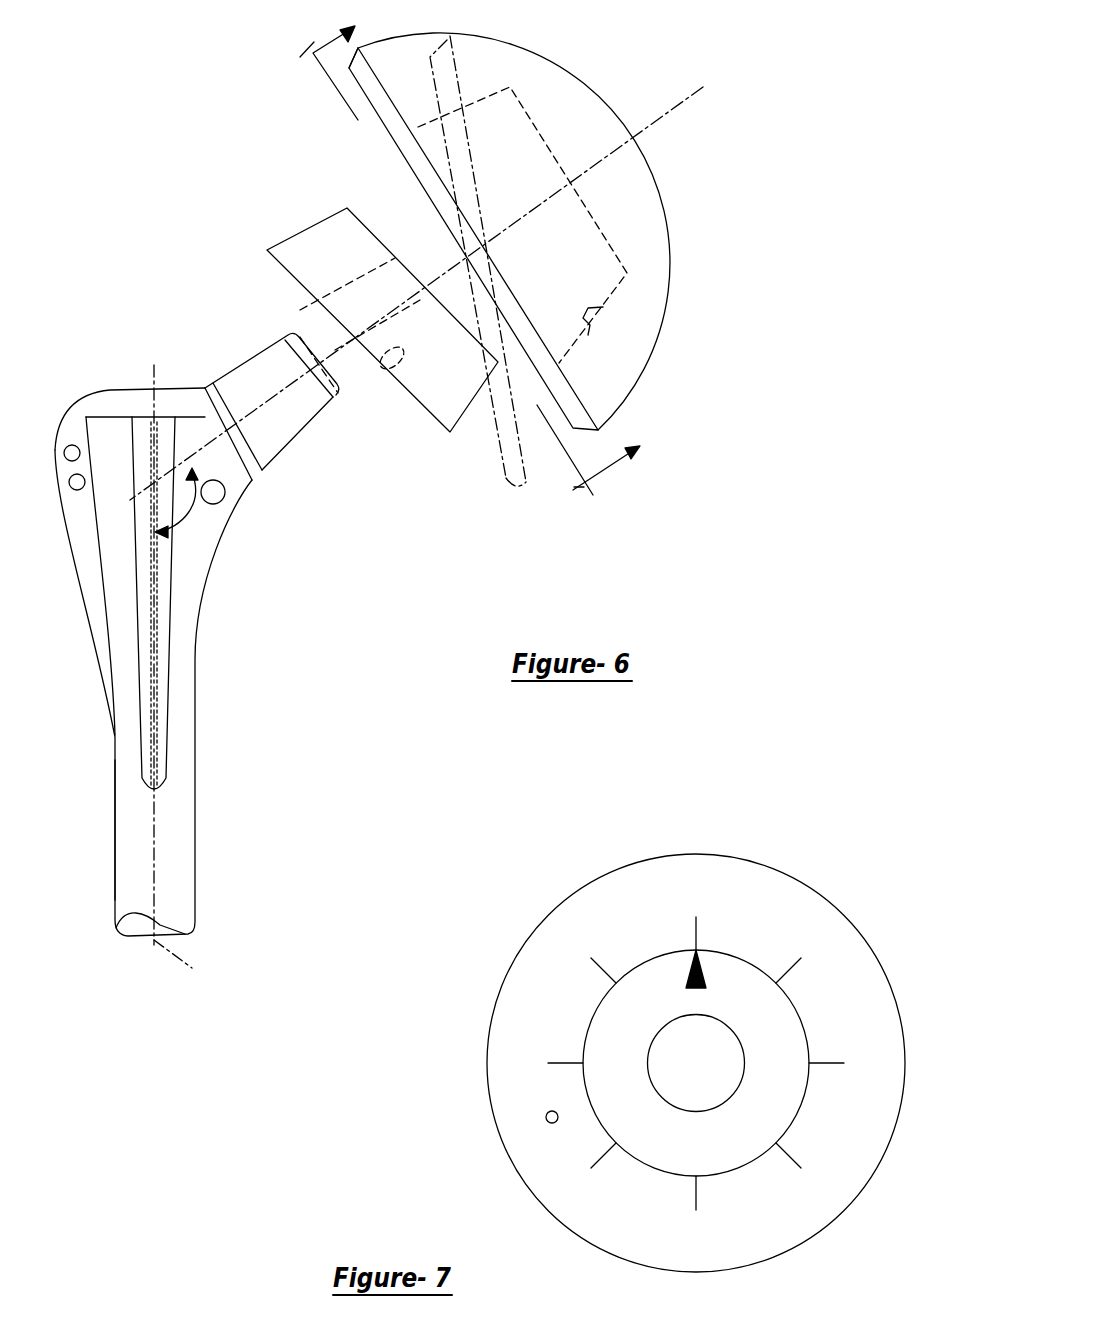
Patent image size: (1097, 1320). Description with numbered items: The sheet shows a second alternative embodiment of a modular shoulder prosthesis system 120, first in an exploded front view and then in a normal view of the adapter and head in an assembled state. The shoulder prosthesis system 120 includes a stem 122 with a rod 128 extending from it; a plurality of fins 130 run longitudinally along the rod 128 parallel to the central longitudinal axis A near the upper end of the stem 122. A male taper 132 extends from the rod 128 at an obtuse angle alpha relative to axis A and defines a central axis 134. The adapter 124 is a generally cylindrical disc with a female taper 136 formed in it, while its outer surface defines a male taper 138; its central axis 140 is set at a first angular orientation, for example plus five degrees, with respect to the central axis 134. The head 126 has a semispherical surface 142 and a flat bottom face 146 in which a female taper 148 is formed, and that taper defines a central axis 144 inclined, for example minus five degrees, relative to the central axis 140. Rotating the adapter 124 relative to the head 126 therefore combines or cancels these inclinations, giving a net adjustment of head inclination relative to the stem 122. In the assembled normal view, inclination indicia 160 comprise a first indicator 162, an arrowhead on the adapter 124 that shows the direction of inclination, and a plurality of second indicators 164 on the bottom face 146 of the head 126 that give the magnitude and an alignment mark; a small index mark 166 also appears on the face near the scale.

In FIG. 6, the shoulder prosthesis system 120 is at (162, 289).
In FIG. 6, the stem 122 is at (108, 795).
In FIG. 6, the adapter 124 is at (455, 430).
In FIG. 6, the head 126 is at (622, 380).
In FIG. 7, the head 126 is at (846, 979).
In FIG. 6, the rod 128 is at (182, 828).
In FIG. 6, the fins 130 is at (97, 577).
In FIG. 6, the male taper 132 is at (267, 433).
In FIG. 6, the central axis 134 is at (259, 410).
In FIG. 6, the female taper 136 is at (380, 362).
In FIG. 6, the male taper 138 is at (300, 235).
In FIG. 6, the central axis 140 is at (433, 290).
In FIG. 6, the semispherical surface 142 is at (665, 252).
In FIG. 6, the central axis 144 is at (667, 110).
In FIG. 6, the flat bottom face 146 is at (386, 128).
In FIG. 6, the female taper 148 is at (603, 307).
In FIG. 7, the inclination indicia 160 is at (650, 947).
In FIG. 7, the first indicator 162 is at (707, 969).
In FIG. 7, the second indicators 164 is at (849, 1148).
In FIG. 7, the index hole 166 is at (545, 1117).